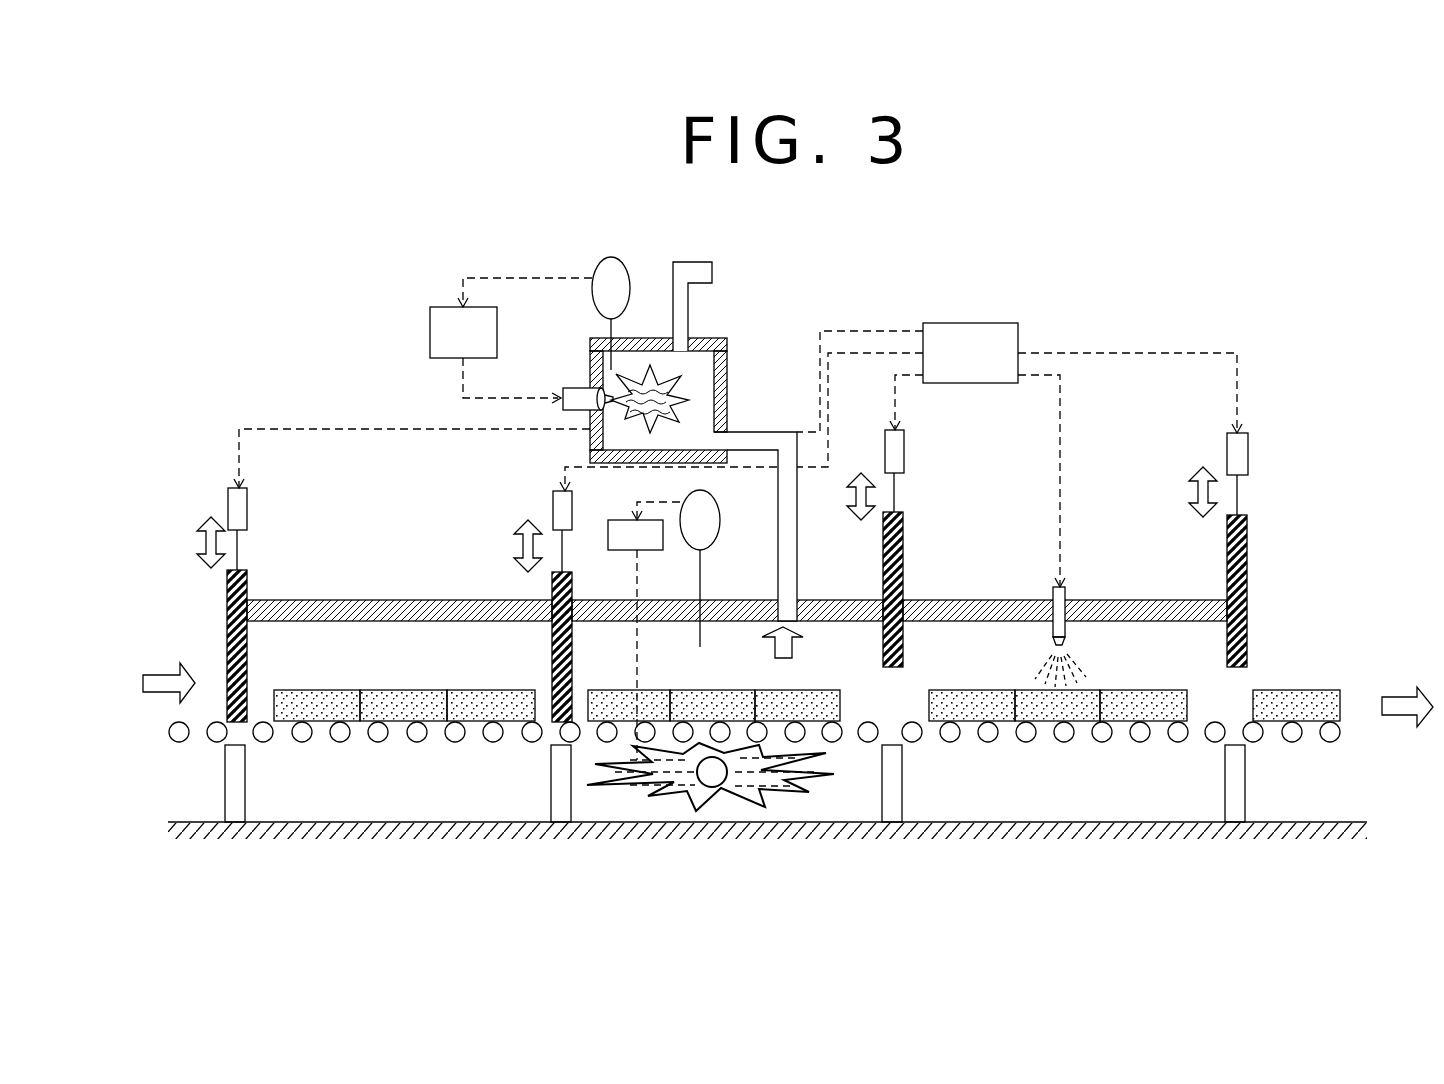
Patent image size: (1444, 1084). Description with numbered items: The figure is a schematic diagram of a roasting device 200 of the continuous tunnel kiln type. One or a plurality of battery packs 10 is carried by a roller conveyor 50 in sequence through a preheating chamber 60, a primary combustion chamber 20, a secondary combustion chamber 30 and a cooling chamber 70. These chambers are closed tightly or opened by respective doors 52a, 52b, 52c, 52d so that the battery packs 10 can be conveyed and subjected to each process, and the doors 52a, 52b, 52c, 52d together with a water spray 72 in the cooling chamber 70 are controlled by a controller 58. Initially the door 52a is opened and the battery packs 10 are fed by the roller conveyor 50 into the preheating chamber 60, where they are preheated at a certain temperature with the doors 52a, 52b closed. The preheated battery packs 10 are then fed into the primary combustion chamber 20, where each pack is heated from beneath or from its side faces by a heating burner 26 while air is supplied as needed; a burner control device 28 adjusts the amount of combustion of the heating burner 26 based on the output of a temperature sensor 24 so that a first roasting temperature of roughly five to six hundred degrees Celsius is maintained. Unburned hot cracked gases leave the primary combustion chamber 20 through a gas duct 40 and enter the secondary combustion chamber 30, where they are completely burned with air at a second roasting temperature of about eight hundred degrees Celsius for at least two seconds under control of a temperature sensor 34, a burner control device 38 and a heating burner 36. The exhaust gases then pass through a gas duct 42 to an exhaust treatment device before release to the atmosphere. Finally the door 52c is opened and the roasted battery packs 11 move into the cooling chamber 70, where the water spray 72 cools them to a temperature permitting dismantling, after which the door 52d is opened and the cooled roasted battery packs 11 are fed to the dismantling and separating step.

The roasting device 200 is at (888, 263).
The battery pack 10 is at (318, 690).
The roasted battery pack 11 is at (1312, 690).
The primary combustion chamber 20 is at (848, 640).
The temperature sensor 24 is at (715, 540).
The heating burner 26 is at (735, 790).
The burner control device 28 is at (608, 538).
The secondary combustion chamber 30 is at (700, 370).
The temperature sensor 34 is at (610, 257).
The heating burner 36 is at (575, 392).
The burner control device 38 is at (430, 330).
The gas duct 40 is at (793, 550).
The gas duct 42 is at (700, 262).
The roller conveyor 50 is at (417, 742).
The door 52a is at (247, 498).
The door 52b is at (553, 497).
The door 52c is at (904, 450).
The door 52d is at (1248, 450).
The controller 58 is at (1018, 338).
The preheating chamber 60 is at (445, 635).
The cooling chamber 70 is at (962, 640).
The water spray 72 is at (1067, 592).